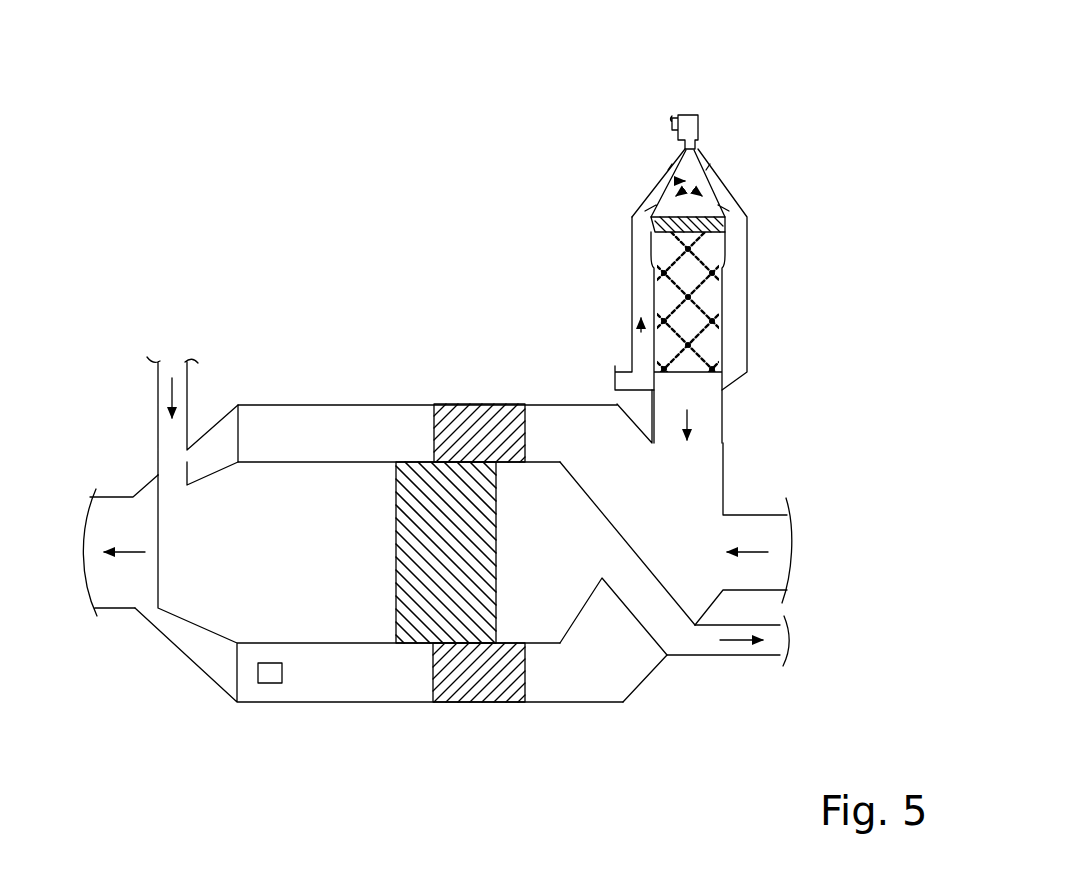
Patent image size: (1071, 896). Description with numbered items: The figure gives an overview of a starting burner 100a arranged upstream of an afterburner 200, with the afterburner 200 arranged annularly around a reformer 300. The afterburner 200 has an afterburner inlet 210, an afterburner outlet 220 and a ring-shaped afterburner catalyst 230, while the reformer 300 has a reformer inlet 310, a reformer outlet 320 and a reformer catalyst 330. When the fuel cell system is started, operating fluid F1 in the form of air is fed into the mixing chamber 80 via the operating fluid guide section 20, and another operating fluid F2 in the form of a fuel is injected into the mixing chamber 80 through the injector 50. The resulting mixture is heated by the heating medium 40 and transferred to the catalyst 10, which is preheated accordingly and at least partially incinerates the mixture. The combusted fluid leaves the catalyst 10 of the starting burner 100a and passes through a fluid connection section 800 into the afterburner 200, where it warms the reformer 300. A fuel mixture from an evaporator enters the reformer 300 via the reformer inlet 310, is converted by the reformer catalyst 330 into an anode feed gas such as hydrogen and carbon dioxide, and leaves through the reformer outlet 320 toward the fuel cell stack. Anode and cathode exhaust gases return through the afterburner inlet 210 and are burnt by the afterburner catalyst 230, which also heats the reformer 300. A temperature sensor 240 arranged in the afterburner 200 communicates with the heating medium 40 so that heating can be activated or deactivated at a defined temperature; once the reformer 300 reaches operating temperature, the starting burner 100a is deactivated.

The catalyst 10 is at (728, 318).
The operating fluid guide section 20 is at (629, 274).
The heating medium 40 is at (652, 228).
The injector 50 is at (700, 128).
The mixing chamber 80 is at (720, 192).
The starting burner 100a is at (814, 211).
The operating fluid F1 is at (628, 326).
The other operating fluid F2 is at (665, 182).
The afterburner 200 is at (439, 364).
The afterburner inlet 210 is at (753, 495).
The afterburner outlet 220 is at (116, 622).
The afterburner catalyst 230 is at (408, 443).
The temperature sensor 240 is at (270, 683).
The reformer 300 is at (349, 612).
The reformer inlet 310 is at (209, 384).
The reformer outlet 320 is at (727, 673).
The reformer catalyst 330 is at (378, 553).
The fluid connection section 800 is at (686, 497).